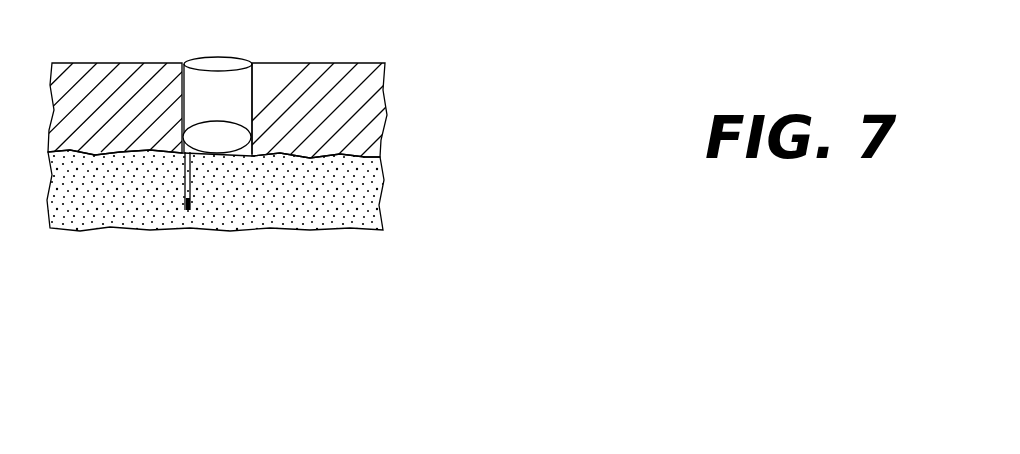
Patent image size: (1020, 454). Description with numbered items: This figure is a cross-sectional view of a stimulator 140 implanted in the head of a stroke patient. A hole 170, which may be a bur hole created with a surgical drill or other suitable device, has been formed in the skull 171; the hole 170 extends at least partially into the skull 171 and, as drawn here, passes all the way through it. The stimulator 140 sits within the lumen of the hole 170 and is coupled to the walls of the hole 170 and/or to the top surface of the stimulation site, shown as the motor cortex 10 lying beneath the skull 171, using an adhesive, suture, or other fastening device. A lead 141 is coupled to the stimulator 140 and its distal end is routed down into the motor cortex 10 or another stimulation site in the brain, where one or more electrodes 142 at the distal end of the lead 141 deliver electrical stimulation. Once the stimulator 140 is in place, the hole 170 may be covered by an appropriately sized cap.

The motor cortex 10 is at (362, 193).
The stimulator 140 is at (235, 148).
The lead 141 is at (183, 175).
The electrodes 142 is at (187, 210).
The hole 170 is at (235, 89).
The skull 171 is at (360, 98).